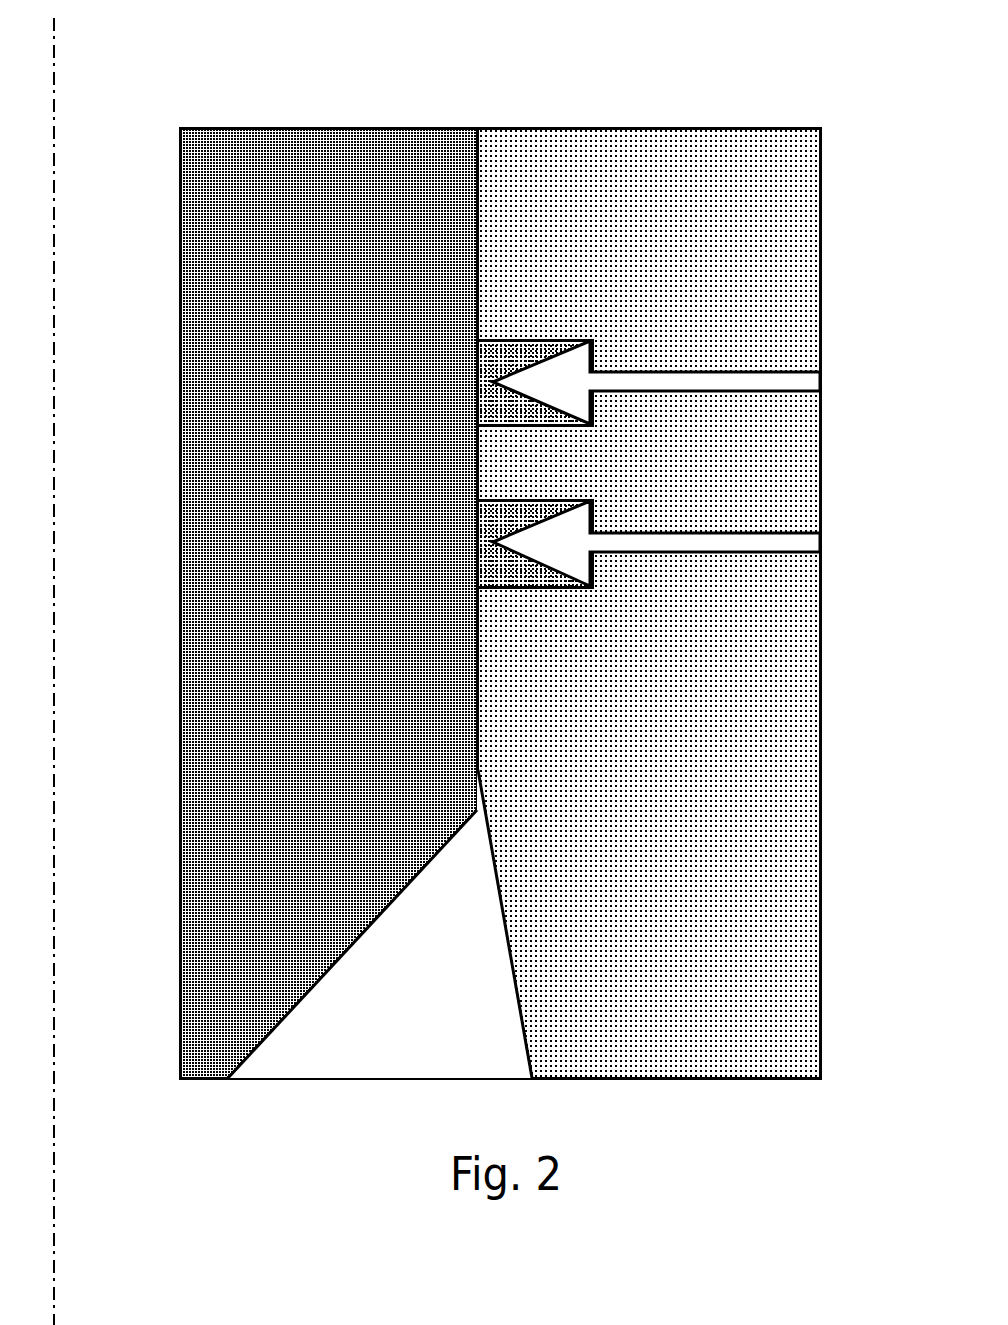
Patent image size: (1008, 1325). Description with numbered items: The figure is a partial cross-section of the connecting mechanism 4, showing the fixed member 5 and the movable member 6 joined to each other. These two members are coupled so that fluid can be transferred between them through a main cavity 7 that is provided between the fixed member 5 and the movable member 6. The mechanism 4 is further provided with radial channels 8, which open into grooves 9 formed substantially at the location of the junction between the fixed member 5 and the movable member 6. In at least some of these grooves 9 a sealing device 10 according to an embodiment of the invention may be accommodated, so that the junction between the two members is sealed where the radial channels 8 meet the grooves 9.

The mechanism 4 is at (497, 539).
The fixed member 5 is at (212, 701).
The movable member 6 is at (790, 762).
The main cavity 7 is at (446, 953).
The radial channel 8 is at (794, 542).
The groove 9 is at (604, 407).
The sealing device 10 is at (544, 363).